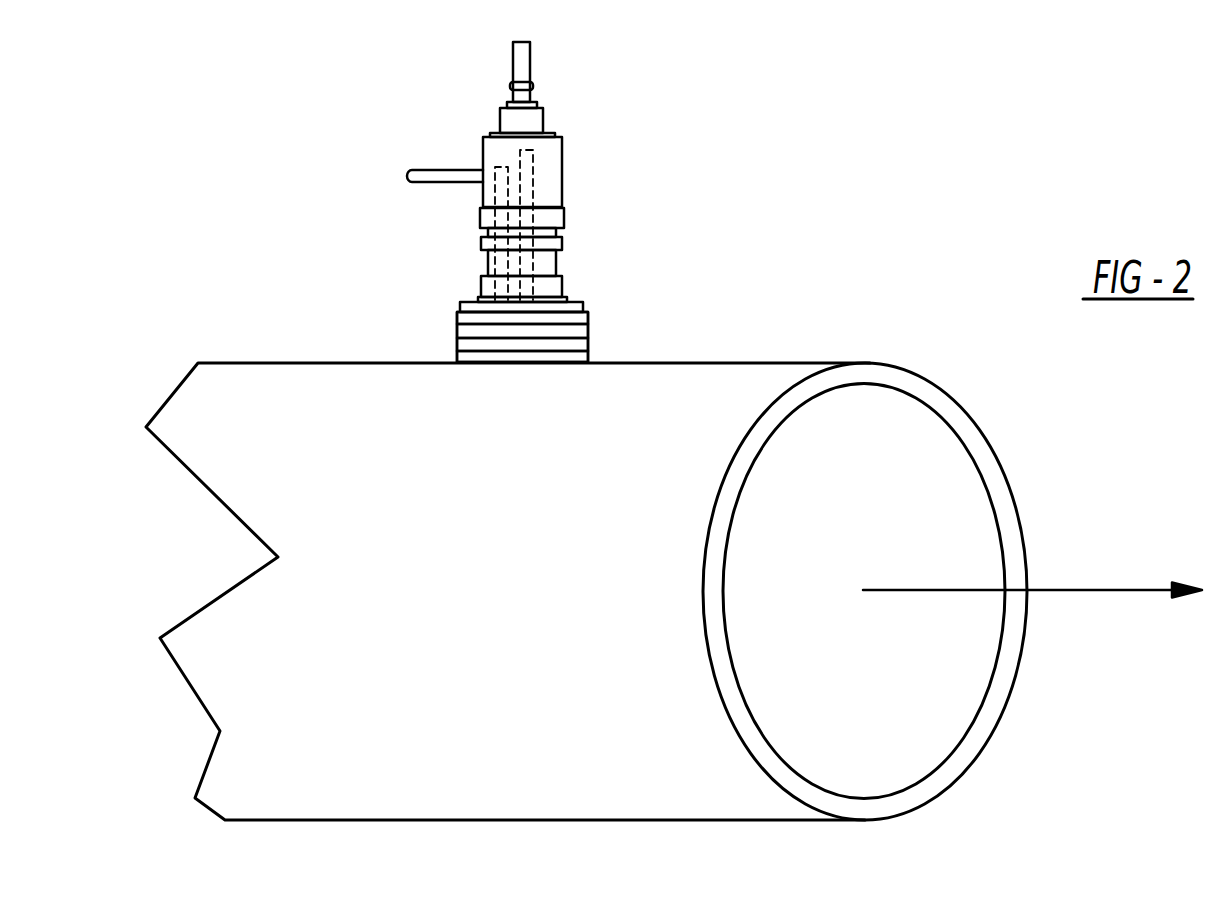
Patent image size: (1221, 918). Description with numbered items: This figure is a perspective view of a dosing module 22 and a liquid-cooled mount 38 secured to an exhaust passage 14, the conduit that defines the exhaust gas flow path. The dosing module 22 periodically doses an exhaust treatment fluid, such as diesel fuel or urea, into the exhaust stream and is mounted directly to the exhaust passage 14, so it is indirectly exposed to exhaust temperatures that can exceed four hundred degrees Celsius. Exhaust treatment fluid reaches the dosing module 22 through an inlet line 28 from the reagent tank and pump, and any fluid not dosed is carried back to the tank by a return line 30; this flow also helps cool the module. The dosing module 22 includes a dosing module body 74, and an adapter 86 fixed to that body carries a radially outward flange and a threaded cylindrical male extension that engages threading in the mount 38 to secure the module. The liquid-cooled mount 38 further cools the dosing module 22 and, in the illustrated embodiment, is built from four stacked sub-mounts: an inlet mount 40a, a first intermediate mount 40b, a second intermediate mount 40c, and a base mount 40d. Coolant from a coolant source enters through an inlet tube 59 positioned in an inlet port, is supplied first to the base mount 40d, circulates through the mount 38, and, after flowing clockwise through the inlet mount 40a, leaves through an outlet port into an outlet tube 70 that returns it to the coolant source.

The exhaust passage 14 is at (448, 821).
The dosing module 22 is at (568, 150).
The inlet line 28 is at (530, 62).
The return line 30 is at (446, 168).
The liquid-cooled mount 38 is at (602, 318).
The inlet mount 40a is at (457, 316).
The first intermediate mount 40b is at (457, 328).
The second intermediate mount 40c is at (457, 344).
The base mount 40d is at (457, 355).
The inlet tube 59 is at (532, 190).
The outlet tube 70 is at (495, 223).
The dosing module body 74 is at (556, 258).
The adapter 86 is at (583, 305).